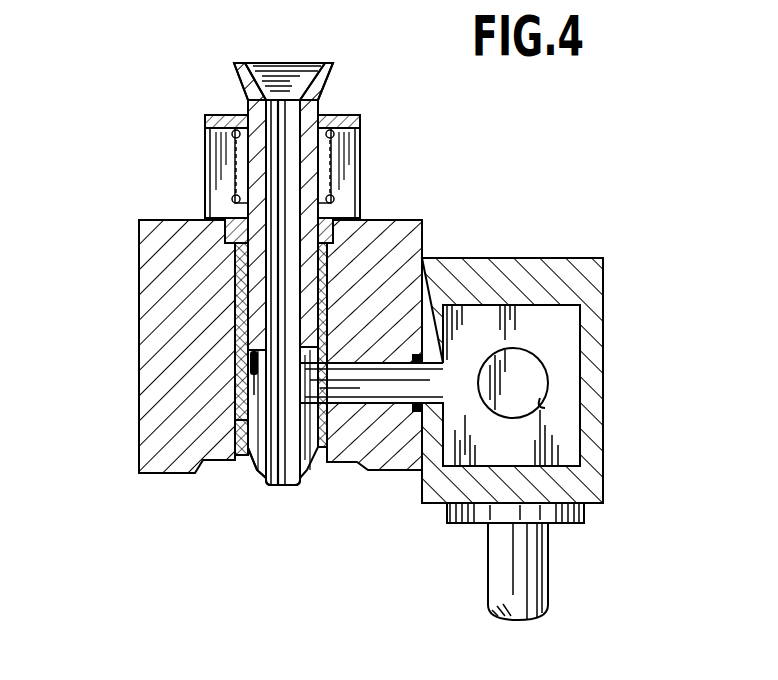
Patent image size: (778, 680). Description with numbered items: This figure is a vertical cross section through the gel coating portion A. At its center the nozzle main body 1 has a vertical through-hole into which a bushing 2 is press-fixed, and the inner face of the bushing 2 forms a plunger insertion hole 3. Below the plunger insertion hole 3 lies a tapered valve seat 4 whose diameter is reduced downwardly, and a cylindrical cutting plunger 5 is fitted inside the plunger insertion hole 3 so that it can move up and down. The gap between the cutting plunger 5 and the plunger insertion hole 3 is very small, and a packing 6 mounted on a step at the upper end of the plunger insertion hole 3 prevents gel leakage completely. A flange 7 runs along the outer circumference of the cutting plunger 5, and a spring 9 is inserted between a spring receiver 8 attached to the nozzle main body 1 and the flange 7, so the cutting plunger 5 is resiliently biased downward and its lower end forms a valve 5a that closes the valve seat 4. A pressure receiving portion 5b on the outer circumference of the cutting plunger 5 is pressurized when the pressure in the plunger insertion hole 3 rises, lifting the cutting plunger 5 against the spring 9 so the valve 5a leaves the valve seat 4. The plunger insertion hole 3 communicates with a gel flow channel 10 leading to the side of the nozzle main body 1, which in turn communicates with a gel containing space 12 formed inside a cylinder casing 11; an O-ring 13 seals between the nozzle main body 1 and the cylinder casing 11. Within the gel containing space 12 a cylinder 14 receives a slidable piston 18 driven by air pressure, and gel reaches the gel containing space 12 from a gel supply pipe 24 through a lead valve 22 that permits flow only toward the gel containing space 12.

The gel coating portion A is at (116, 237).
The nozzle main body 1 is at (140, 222).
The bushing 2 is at (238, 332).
The plunger insertion hole 3 is at (238, 424).
The tapered valve seat 4 is at (248, 465).
The cutting plunger 5 is at (248, 302).
The valve 5a is at (272, 488).
The pressure receiving portion 5b is at (250, 378).
The packing 6 is at (350, 232).
The flange 7 is at (228, 222).
The spring receiver 8 is at (342, 112).
The spring 9 is at (212, 118).
The gel flow channel 10 is at (367, 395).
The cylinder casing 11 is at (528, 258).
The gel containing space 12 is at (565, 365).
The O-ring 13 is at (420, 355).
The cylinder 14 is at (540, 400).
The piston 18 is at (528, 360).
The lead valve 22 is at (584, 515).
The gel supply pipe 24 is at (530, 575).